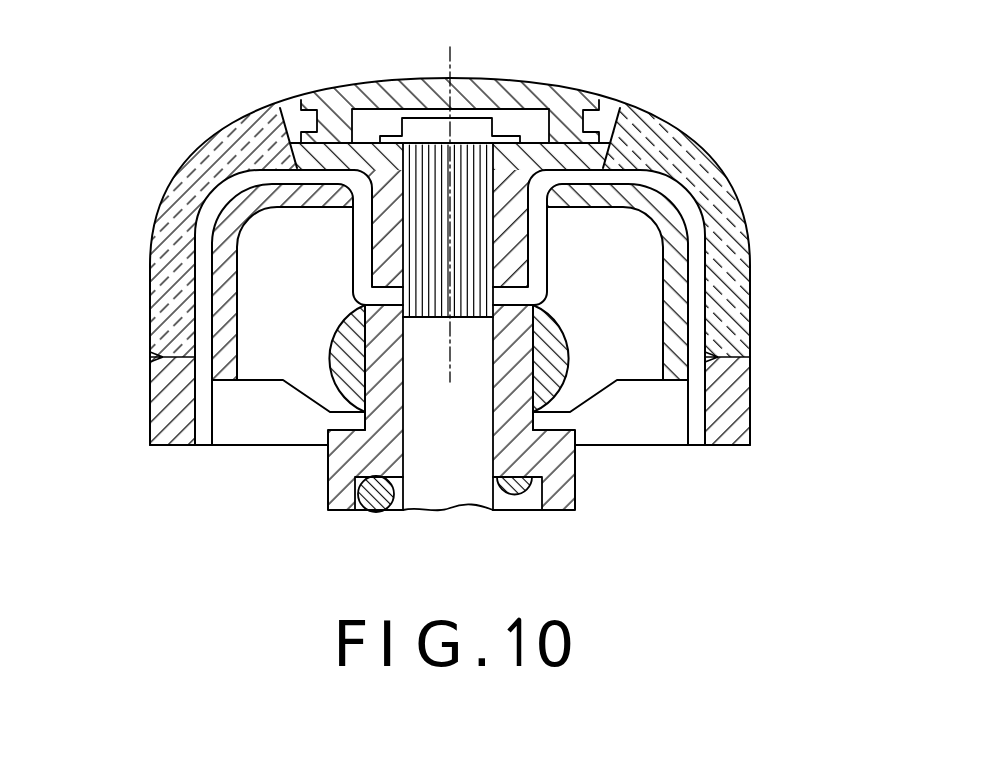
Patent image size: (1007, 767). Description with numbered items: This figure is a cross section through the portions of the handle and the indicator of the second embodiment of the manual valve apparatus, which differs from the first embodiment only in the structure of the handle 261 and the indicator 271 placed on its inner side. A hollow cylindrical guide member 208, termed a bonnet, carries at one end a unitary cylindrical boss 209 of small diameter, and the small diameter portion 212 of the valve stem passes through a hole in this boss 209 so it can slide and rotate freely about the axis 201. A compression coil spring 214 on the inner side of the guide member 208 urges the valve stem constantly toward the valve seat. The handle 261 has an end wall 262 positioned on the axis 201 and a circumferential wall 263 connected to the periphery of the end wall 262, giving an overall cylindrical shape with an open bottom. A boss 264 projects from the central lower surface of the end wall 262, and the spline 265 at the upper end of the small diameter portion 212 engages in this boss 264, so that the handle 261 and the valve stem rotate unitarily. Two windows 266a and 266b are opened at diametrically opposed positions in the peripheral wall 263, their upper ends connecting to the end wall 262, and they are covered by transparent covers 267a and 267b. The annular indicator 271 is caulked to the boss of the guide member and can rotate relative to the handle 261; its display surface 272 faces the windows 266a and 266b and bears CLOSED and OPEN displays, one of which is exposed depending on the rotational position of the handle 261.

The axis 201 is at (452, 50).
The guide member 208 is at (575, 487).
The cylindrical boss 209 is at (536, 340).
The small diameter portion 212 is at (465, 490).
The compression coil spring 214 is at (376, 503).
The handle 261 is at (450, 222).
The end wall 262 is at (565, 130).
The circumferential wall 263 is at (756, 372).
The boss 264 is at (517, 228).
The spline 265 is at (410, 177).
The window 266a is at (283, 142).
The window 266b is at (627, 146).
The transparent cover 267a is at (167, 254).
The transparent cover 267b is at (737, 257).
The indicator 271 is at (215, 295).
The display surface 272 is at (221, 212).